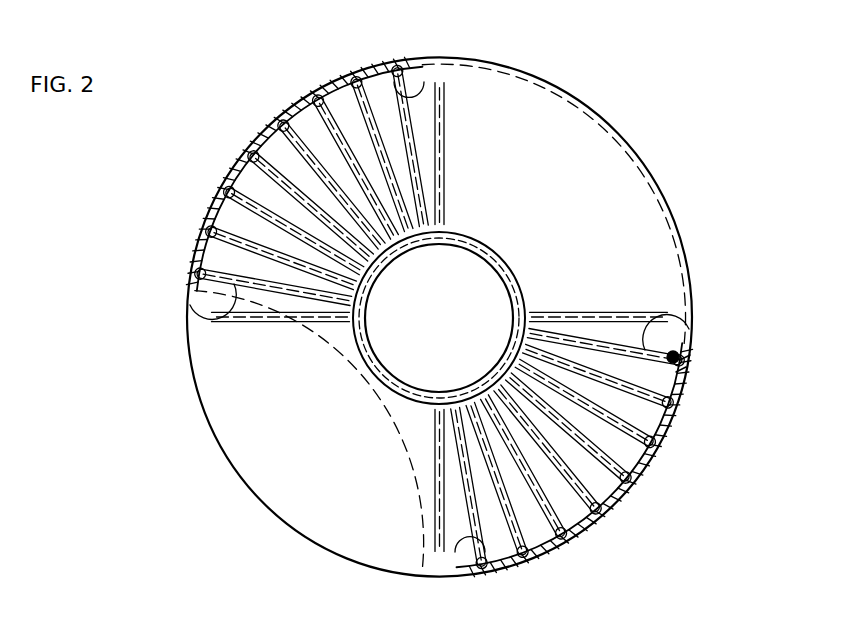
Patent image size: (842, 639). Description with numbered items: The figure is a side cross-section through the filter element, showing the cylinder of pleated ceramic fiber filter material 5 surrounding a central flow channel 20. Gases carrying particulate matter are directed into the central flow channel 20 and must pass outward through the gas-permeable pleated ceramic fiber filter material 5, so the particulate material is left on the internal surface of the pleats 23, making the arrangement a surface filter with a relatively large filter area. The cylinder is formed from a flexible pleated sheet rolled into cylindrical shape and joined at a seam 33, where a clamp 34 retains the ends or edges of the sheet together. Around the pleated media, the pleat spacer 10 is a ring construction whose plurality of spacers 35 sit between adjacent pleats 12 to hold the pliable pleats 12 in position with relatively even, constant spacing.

The pleated ceramic fiber filter material 5 is at (420, 141).
The central pleat spacer 10 is at (380, 74).
The pleats 12 is at (192, 303).
The central flow channel 20 is at (468, 252).
The pleats 23 is at (322, 116).
The seam 33 is at (692, 345).
The clamp 34 is at (688, 366).
The spacers 35 is at (417, 80).